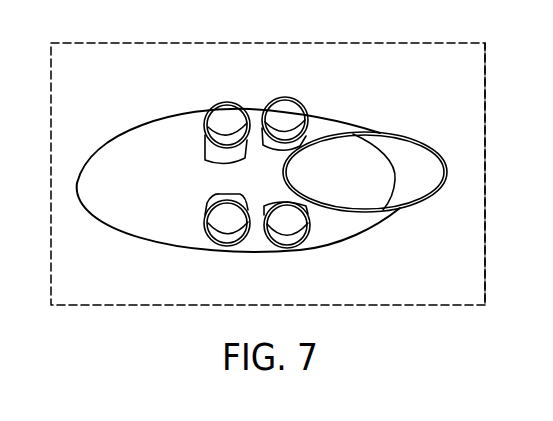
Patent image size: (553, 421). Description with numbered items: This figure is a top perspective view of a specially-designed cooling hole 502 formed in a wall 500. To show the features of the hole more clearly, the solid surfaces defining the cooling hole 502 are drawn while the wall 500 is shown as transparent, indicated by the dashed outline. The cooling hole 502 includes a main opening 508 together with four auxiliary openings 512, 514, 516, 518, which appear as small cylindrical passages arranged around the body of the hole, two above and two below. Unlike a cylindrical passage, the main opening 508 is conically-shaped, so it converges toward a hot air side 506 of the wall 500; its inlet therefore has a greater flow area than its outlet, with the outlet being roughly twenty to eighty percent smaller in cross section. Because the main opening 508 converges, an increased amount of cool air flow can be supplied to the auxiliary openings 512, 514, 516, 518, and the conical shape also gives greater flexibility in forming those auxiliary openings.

The wall 500 is at (458, 70).
The cooling hole 502 is at (378, 235).
The hot air side 506 is at (476, 230).
The main opening 508 is at (425, 172).
The auxiliary opening 512 is at (228, 238).
The auxiliary opening 514 is at (287, 247).
The auxiliary opening 516 is at (228, 115).
The auxiliary opening 518 is at (285, 104).